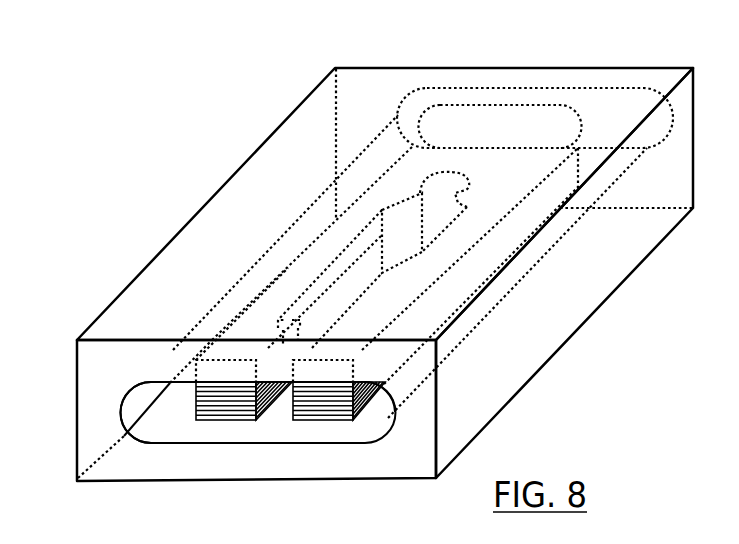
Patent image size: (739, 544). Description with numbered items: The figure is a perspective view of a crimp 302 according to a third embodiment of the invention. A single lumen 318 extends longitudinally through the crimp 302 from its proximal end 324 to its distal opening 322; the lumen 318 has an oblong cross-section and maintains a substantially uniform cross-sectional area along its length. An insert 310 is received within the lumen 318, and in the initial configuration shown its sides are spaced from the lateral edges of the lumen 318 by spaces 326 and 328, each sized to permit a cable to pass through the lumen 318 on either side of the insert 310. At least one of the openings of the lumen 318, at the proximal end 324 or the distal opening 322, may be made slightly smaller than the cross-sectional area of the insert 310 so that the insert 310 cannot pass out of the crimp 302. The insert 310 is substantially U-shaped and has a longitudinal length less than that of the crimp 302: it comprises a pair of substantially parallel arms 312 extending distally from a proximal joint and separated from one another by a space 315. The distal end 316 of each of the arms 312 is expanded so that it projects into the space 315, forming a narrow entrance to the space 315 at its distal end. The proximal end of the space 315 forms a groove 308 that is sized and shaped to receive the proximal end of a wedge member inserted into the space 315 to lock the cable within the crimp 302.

The crimp 302 is at (493, 388).
The groove 308 is at (452, 172).
The insert 310 is at (502, 243).
The arms 312 is at (213, 410).
The space 315 is at (363, 268).
The distal end 316 is at (322, 337).
The lumen 318 is at (165, 428).
The distal opening 322 is at (350, 441).
The proximal end 324 is at (550, 87).
The space 326 is at (136, 420).
The space 328 is at (378, 407).